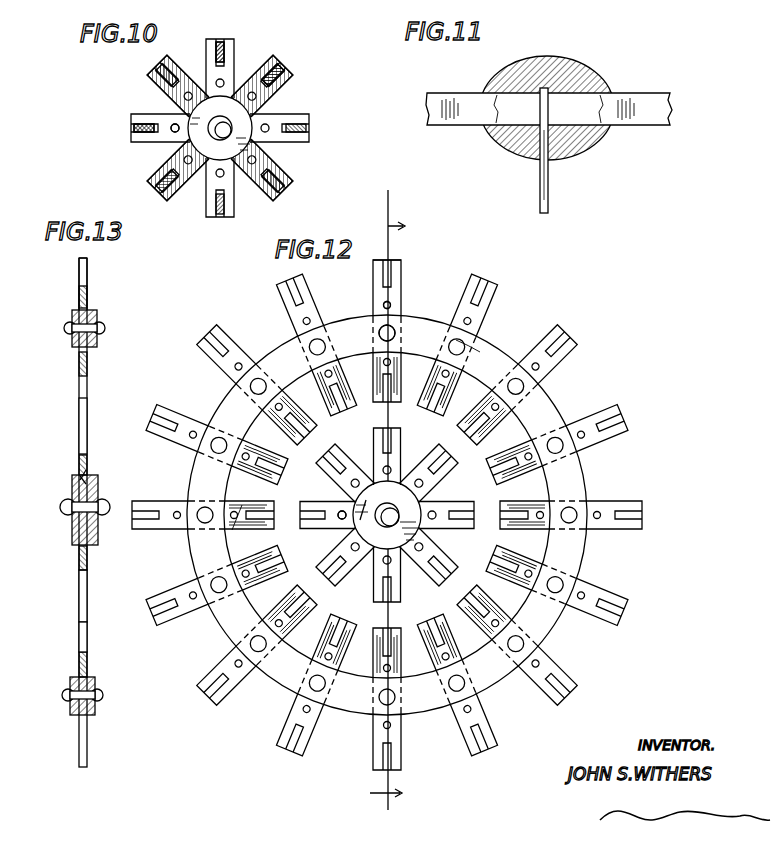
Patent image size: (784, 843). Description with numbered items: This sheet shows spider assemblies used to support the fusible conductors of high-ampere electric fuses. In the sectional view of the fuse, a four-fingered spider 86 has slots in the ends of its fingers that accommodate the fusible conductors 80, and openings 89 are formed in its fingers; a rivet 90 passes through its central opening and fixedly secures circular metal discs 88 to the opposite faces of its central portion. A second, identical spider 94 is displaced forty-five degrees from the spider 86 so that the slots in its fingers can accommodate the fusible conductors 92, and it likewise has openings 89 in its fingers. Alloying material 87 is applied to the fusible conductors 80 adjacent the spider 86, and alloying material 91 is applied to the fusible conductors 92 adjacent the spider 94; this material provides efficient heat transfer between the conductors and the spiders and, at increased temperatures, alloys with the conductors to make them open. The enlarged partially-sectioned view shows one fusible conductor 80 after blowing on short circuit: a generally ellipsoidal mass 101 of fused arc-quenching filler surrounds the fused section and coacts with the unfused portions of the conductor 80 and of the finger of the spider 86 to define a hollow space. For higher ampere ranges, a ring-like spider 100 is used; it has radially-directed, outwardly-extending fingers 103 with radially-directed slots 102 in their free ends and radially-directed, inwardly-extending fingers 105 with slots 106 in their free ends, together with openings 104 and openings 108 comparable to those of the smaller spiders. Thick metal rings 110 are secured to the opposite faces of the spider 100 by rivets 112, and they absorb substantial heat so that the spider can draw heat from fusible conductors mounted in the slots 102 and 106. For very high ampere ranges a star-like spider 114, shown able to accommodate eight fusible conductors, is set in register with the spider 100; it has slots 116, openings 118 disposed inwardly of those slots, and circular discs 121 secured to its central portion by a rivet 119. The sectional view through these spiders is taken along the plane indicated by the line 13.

In FIG. 12, the section line 13— 13 is at (387, 501).
In FIG. 10, the fusible conductor 80 is at (222, 48).
In FIG. 11, the fusible conductor 80 is at (470, 118).
In FIG. 10, the spider 86 is at (232, 73).
In FIG. 11, the spider 86 is at (550, 205).
In FIG. 10, the alloying material 87 is at (135, 120).
In FIG. 10, the circular metal disc 88 is at (195, 132).
In FIG. 10, the opening 89 is at (178, 112).
In FIG. 10, the rivet 90 is at (216, 118).
In FIG. 10, the alloying material 91 is at (250, 90).
In FIG. 10, the fusible conductor 92 is at (152, 70).
In FIG. 10, the spider 94 is at (264, 100).
In FIG. 13, the ring-like spider 100 is at (88, 352).
In FIG. 12, the ring-like spider 100 is at (572, 298).
In FIG. 11, the mass of fused filler 101 is at (582, 148).
In FIG. 13, the slot 102 is at (90, 266).
In FIG. 12, the slot 102 is at (600, 418).
In FIG. 13, the outwardly-extending finger 103 is at (80, 272).
In FIG. 12, the outwardly-extending finger 103 is at (622, 502).
In FIG. 13, the opening 104 is at (80, 298).
In FIG. 12, the opening 104 is at (386, 306).
In FIG. 13, the inwardly-extending finger 105 is at (82, 365).
In FIG. 12, the inwardly-extending finger 105 is at (292, 510).
In FIG. 13, the slot 106 is at (80, 645).
In FIG. 12, the slot 106 is at (478, 455).
In FIG. 12, the opening 108 is at (468, 374).
In FIG. 13, the thick metal ring 110 is at (75, 348).
In FIG. 12, the thick metal ring 110 is at (578, 458).
In FIG. 13, the rivet 112 is at (100, 328).
In FIG. 12, the rivet 112 is at (398, 328).
In FIG. 13, the star-like spider 114 is at (95, 470).
In FIG. 12, the star-like spider 114 is at (392, 450).
In FIG. 13, the slot 116 is at (80, 433).
In FIG. 12, the slot 116 is at (388, 432).
In FIG. 13, the opening 118 is at (85, 468).
In FIG. 12, the opening 118 is at (358, 494).
In FIG. 13, the rivet 119 is at (70, 505).
In FIG. 12, the rivet 119 is at (398, 540).
In FIG. 13, the circular disc 121 is at (80, 482).
In FIG. 12, the circular disc 121 is at (362, 530).